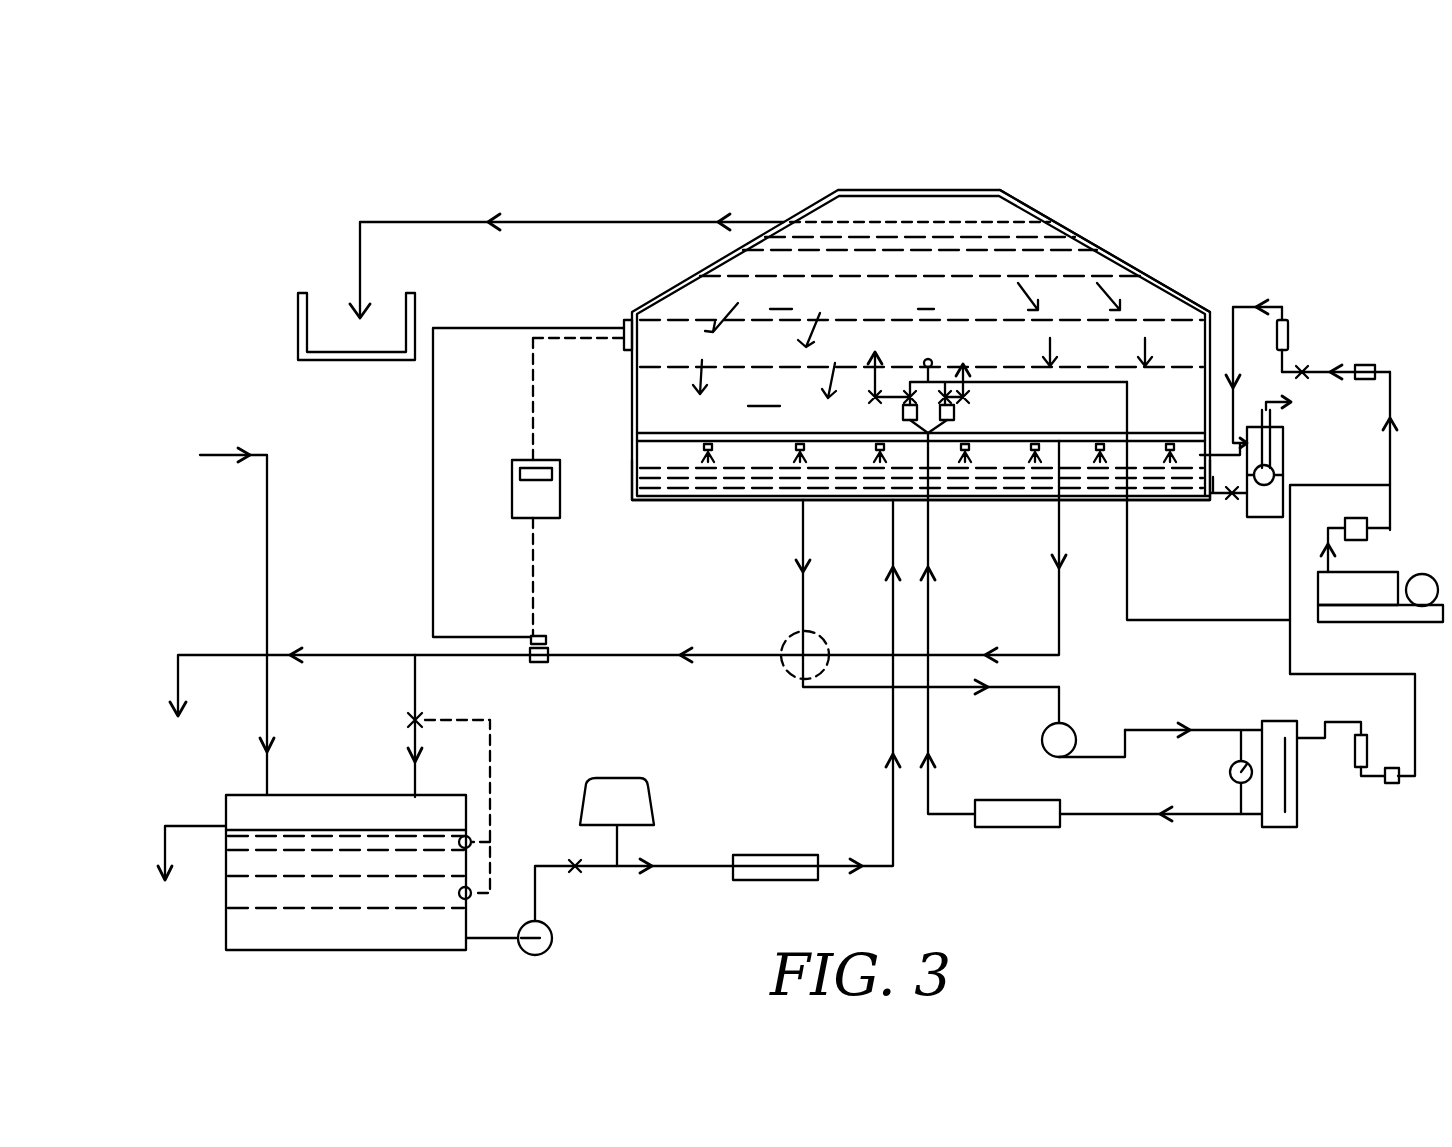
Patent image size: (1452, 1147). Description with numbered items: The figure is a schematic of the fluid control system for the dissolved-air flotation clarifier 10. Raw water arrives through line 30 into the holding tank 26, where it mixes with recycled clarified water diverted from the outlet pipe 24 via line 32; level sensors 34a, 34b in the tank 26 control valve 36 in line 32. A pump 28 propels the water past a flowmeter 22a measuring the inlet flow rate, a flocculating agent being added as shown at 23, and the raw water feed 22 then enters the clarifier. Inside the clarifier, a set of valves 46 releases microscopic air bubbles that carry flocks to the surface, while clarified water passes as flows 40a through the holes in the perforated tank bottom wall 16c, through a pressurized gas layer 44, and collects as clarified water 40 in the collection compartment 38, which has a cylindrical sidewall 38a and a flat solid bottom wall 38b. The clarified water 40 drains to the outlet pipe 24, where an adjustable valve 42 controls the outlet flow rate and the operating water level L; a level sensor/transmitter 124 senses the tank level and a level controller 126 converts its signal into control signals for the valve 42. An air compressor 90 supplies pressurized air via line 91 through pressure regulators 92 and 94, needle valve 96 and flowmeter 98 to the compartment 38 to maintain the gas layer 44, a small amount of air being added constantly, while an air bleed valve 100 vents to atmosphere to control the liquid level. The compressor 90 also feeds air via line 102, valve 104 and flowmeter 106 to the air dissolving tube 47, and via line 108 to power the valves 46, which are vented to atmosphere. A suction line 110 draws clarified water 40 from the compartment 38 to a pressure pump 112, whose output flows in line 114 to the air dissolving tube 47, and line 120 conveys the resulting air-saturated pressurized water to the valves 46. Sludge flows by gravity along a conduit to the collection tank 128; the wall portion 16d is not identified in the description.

The clarifier 10 is at (1157, 236).
The water level L is at (930, 218).
The tank bottom wall 16c is at (1055, 213).
The pipe 16d is at (1220, 318).
The pressurized gas layer 44 is at (648, 435).
The clarified water flows 40a is at (718, 450).
The clarified water 40 is at (732, 488).
The clarified collection compartment 38 is at (624, 470).
The sidewall 38a is at (1215, 500).
The bottom wall 38b is at (1135, 505).
The level sensor/transmitter 124 is at (622, 322).
The level controller 126 is at (560, 505).
The collection tank 128 is at (298, 313).
The valves 46 is at (903, 411).
The flowmeter 98 is at (1290, 320).
The needle valve 96 is at (1302, 358).
The pressure regulator 94 is at (1370, 365).
The air bleed valve 100 is at (1283, 445).
The line 91 is at (1392, 462).
The pressure regulator 92 is at (1356, 518).
The air compressor 90 is at (1388, 572).
The line 108 is at (1180, 620).
The line 102 is at (1355, 676).
The flowmeter 106 is at (1366, 745).
The valve 104 is at (1392, 783).
The air dissolving tube 47 is at (1297, 790).
The line 114 is at (1150, 730).
The pressure pump 112 is at (1068, 730).
The suction line 110 is at (803, 607).
The line 120 is at (930, 720).
The raw water feed 22 is at (893, 610).
The flowmeter 22a is at (773, 855).
The flocculating agent addition 23 is at (648, 795).
The outlet pipe 24 is at (232, 652).
The adjustable valve 42 is at (546, 648).
The line 30 is at (267, 528).
The line 32 is at (418, 680).
The valve 36 is at (405, 720).
The level sensor 34a is at (472, 842).
The level sensor 34b is at (472, 890).
The holding tank 26 is at (226, 893).
The pump 28 is at (550, 940).